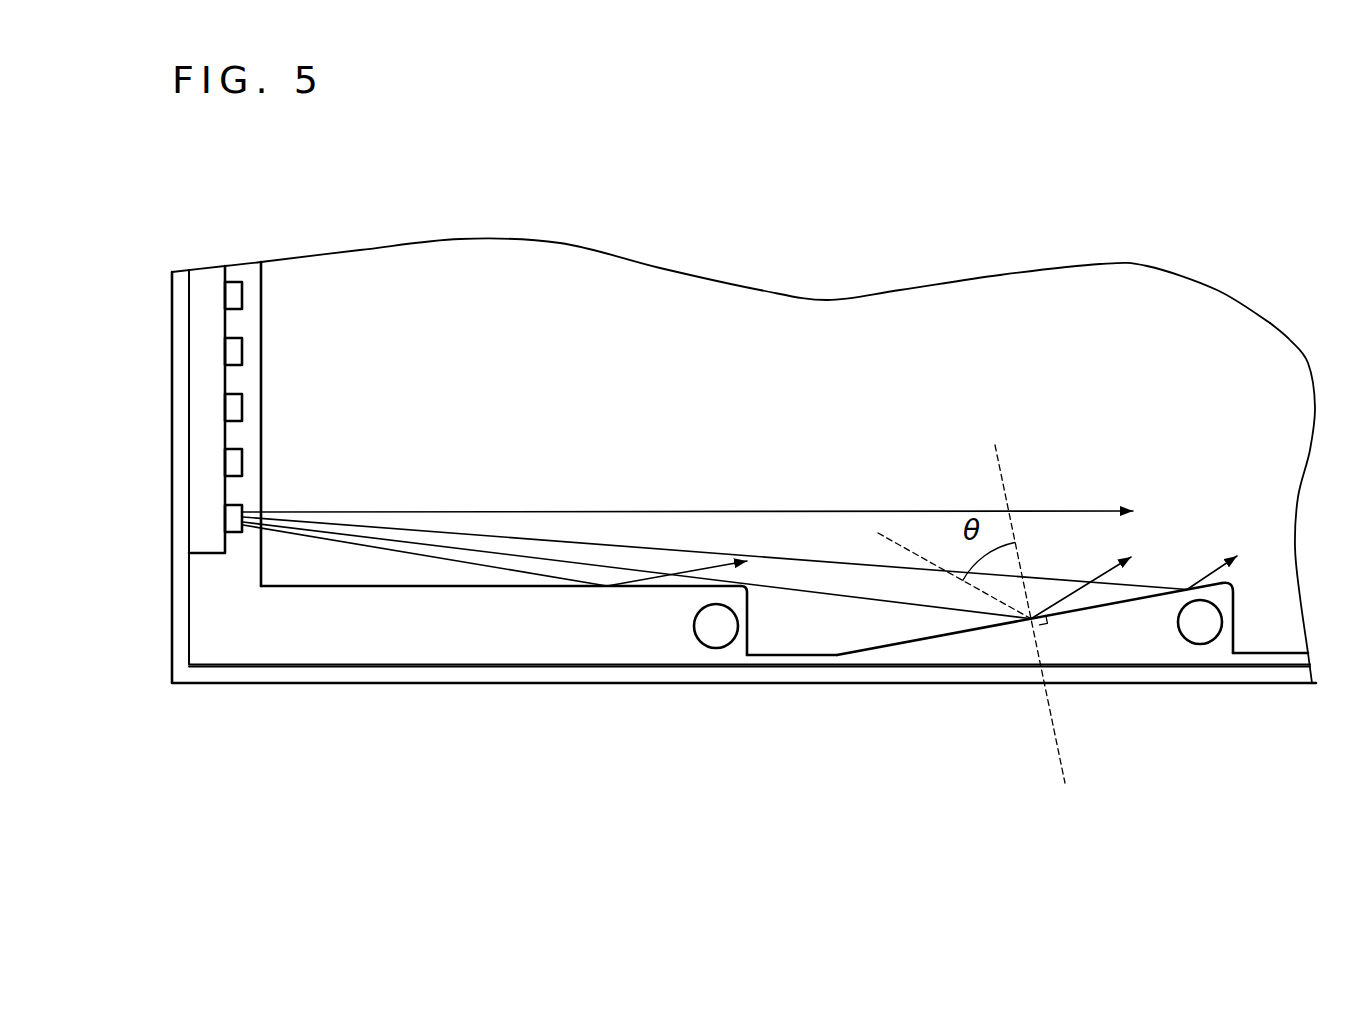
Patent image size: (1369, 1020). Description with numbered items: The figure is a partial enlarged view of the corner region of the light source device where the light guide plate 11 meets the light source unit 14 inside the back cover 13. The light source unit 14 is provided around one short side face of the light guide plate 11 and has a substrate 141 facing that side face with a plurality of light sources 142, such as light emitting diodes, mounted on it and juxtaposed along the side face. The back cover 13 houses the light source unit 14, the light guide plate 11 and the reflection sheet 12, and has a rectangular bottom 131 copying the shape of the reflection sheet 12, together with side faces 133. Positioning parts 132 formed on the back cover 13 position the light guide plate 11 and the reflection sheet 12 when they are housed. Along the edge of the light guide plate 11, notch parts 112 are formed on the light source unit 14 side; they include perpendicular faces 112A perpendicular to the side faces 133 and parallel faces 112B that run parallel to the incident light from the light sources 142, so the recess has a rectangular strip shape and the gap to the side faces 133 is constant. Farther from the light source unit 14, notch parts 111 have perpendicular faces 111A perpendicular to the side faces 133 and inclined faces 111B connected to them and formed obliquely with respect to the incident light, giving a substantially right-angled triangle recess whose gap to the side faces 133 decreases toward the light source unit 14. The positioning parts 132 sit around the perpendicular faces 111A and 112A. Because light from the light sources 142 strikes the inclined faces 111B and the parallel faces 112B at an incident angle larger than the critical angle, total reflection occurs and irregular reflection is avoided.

The light guide plate 11 is at (1038, 292).
The reflection sheet 12 is at (1195, 296).
The back cover 13 is at (761, 541).
The bottom 131 is at (398, 667).
The side faces 133 is at (492, 667).
The positioning parts 132 is at (716, 648).
The light source unit 14 is at (147, 511).
The substrate 141 is at (198, 333).
The light sources 142 is at (228, 408).
The notch parts 112 is at (794, 525).
The perpendicular faces 112A is at (747, 615).
The parallel faces 112B is at (335, 588).
The notch parts 111 is at (1037, 686).
The perpendicular faces 111A is at (1232, 618).
The inclined faces 111B is at (1098, 606).